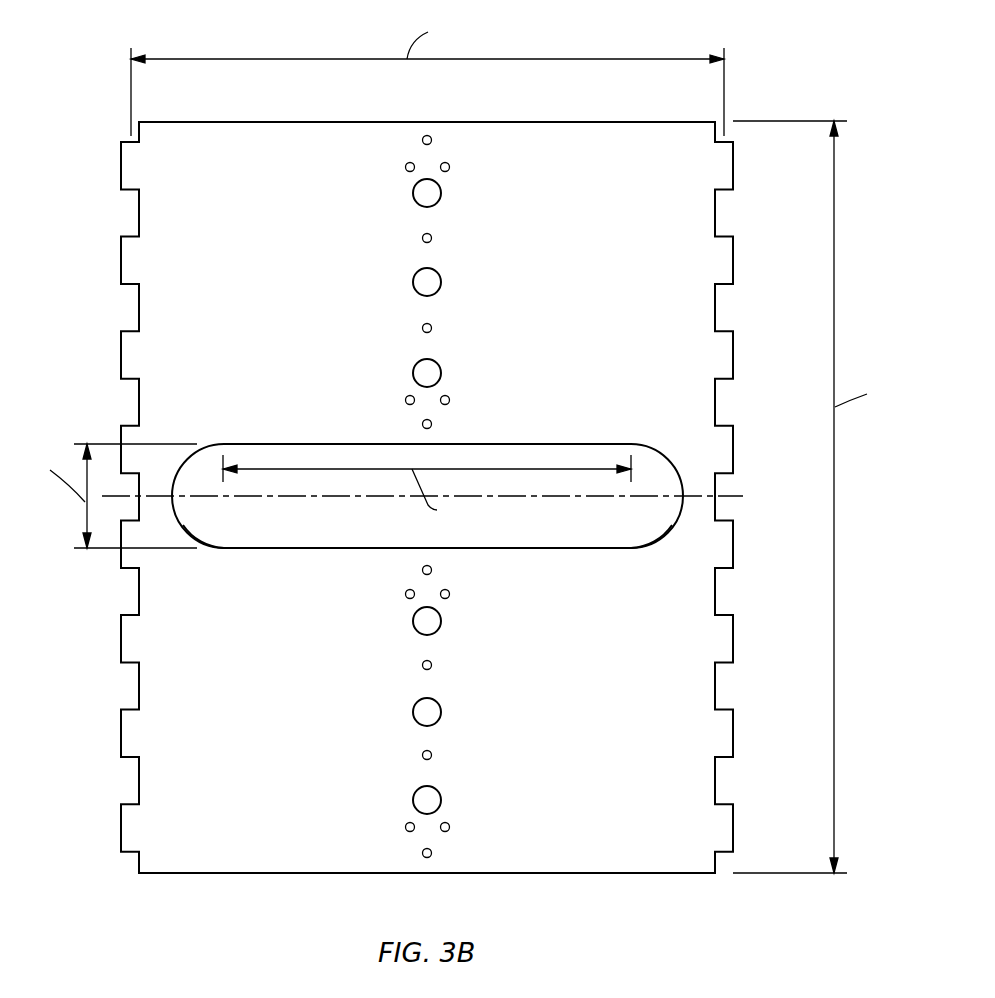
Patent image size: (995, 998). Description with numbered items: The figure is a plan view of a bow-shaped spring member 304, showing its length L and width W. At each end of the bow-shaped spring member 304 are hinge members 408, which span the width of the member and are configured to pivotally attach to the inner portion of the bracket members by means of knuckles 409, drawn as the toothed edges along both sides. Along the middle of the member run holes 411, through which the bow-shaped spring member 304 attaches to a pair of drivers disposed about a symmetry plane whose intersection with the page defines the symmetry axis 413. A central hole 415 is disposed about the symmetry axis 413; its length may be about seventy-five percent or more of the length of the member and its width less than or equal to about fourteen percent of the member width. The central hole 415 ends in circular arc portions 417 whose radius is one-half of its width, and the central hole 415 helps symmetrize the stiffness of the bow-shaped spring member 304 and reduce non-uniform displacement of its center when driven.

The bow-shaped spring member 304 is at (455, 442).
The hinge members 408 is at (117, 387).
The knuckles 409 is at (121, 258).
The holes 411 is at (432, 188).
The symmetry axis 413 is at (743, 497).
The central hole 415 is at (663, 465).
The circular arc portions 417 is at (181, 525).